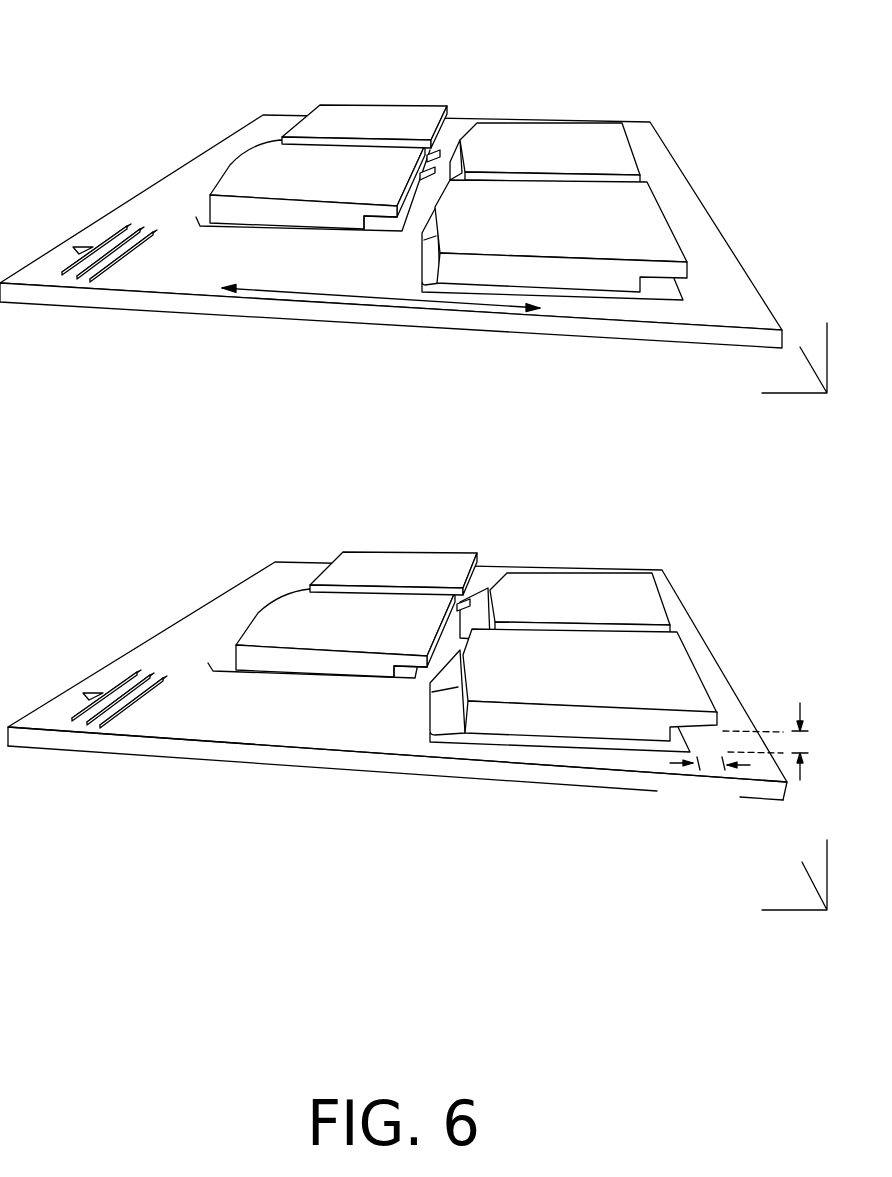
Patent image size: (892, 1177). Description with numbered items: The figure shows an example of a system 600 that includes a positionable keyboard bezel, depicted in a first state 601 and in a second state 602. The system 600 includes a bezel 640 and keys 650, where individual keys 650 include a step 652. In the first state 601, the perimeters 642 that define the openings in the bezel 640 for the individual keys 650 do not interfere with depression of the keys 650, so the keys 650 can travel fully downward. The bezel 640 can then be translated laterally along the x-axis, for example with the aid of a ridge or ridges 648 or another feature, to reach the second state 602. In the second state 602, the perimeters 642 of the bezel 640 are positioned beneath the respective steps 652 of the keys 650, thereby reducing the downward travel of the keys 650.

The system 600 is at (423, 474).
The first state 601 is at (608, 71).
The second state 602 is at (686, 724).
The bezel 640 is at (203, 271).
The perimeters 642 is at (387, 236).
The ridge or ridges 648 is at (100, 241).
The keys 650 is at (307, 174).
The steps 652 is at (386, 208).